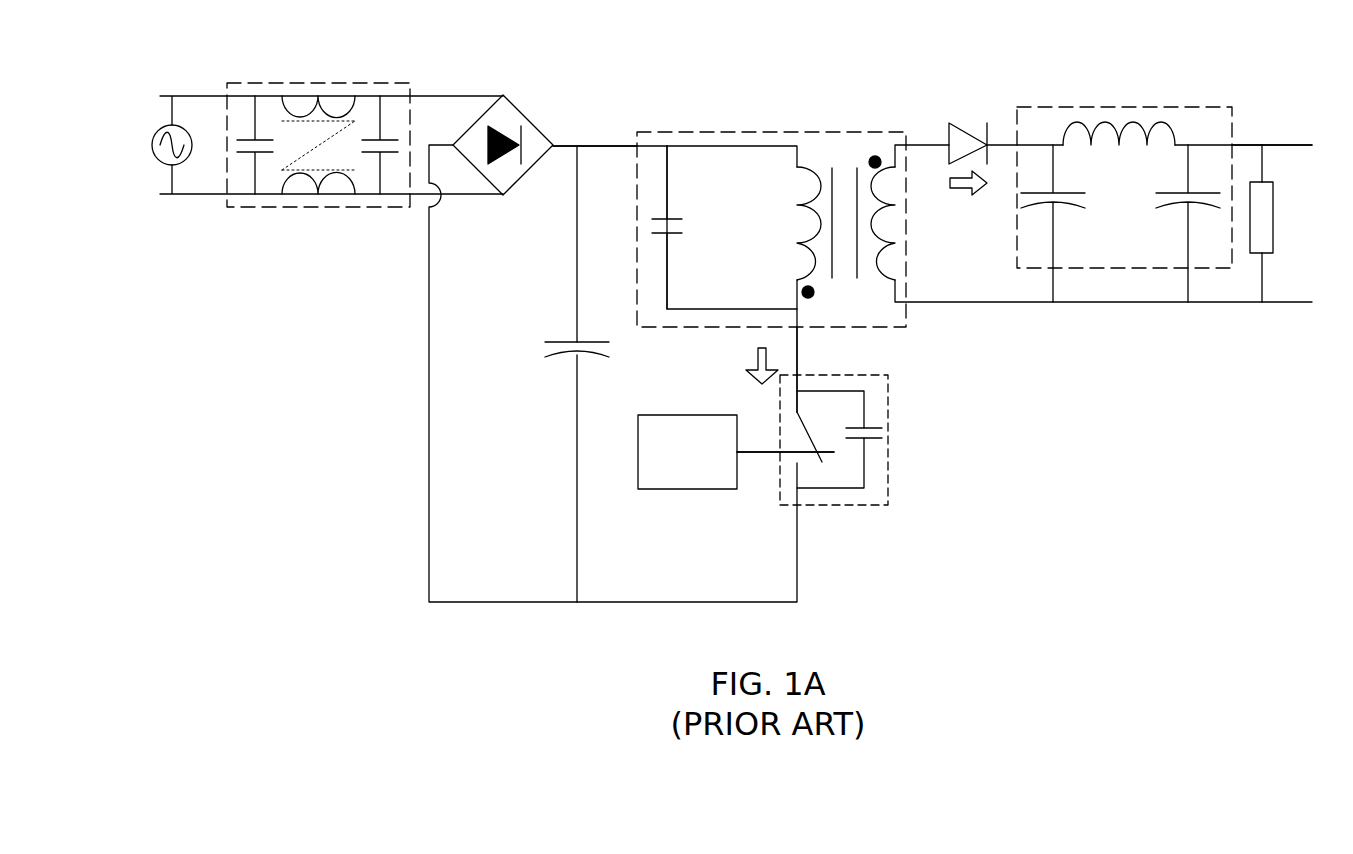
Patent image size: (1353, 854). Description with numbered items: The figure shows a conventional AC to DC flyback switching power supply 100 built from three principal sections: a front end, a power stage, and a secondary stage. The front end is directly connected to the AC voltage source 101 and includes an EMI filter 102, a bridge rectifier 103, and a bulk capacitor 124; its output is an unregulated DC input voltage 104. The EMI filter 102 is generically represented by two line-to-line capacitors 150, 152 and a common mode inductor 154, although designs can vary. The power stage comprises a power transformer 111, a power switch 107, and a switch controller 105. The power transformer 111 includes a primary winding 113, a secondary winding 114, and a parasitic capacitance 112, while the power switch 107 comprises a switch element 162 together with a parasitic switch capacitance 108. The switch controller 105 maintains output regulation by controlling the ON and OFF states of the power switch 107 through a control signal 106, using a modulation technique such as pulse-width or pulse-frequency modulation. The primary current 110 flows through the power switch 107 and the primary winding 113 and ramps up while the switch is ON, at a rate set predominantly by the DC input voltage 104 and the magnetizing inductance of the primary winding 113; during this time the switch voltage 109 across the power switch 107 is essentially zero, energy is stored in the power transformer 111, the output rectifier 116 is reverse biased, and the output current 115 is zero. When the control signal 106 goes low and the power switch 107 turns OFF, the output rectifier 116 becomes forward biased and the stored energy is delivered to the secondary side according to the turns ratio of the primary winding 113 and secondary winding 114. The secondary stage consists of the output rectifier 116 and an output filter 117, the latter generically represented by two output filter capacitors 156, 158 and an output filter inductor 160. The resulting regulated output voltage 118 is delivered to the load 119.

The flyback switching power supply 100 is at (1067, 442).
The AC voltage source 101 is at (152, 152).
The EMI filter 102 is at (343, 82).
The bridge rectifier 103 is at (523, 112).
The DC input voltage 104 is at (620, 143).
The switch controller 105 is at (693, 413).
The control signal 106 is at (763, 453).
The power switch 107 is at (892, 477).
The parasitic switch capacitance 108 is at (880, 420).
The switch voltage 109 is at (798, 353).
The primary current 110 is at (745, 355).
The power transformer 111 is at (820, 132).
The parasitic capacitance 112 is at (685, 218).
The primary winding 113 is at (802, 212).
The secondary winding 114 is at (875, 258).
The output current 115 is at (975, 193).
The output rectifier 116 is at (967, 122).
The output filter 117 is at (1128, 107).
The regulated output voltage 118 is at (1270, 142).
The load 119 is at (1275, 230).
The bulk capacitor 124 is at (562, 340).
The line-to-line capacitor 150 is at (245, 138).
The line-to-line capacitor 152 is at (388, 138).
The common mode inductor 154 is at (350, 123).
The output filter capacitor 156 is at (1030, 193).
The output filter capacitor 158 is at (1203, 193).
The output filter inductor 160 is at (1158, 122).
The switch element 162 is at (810, 432).